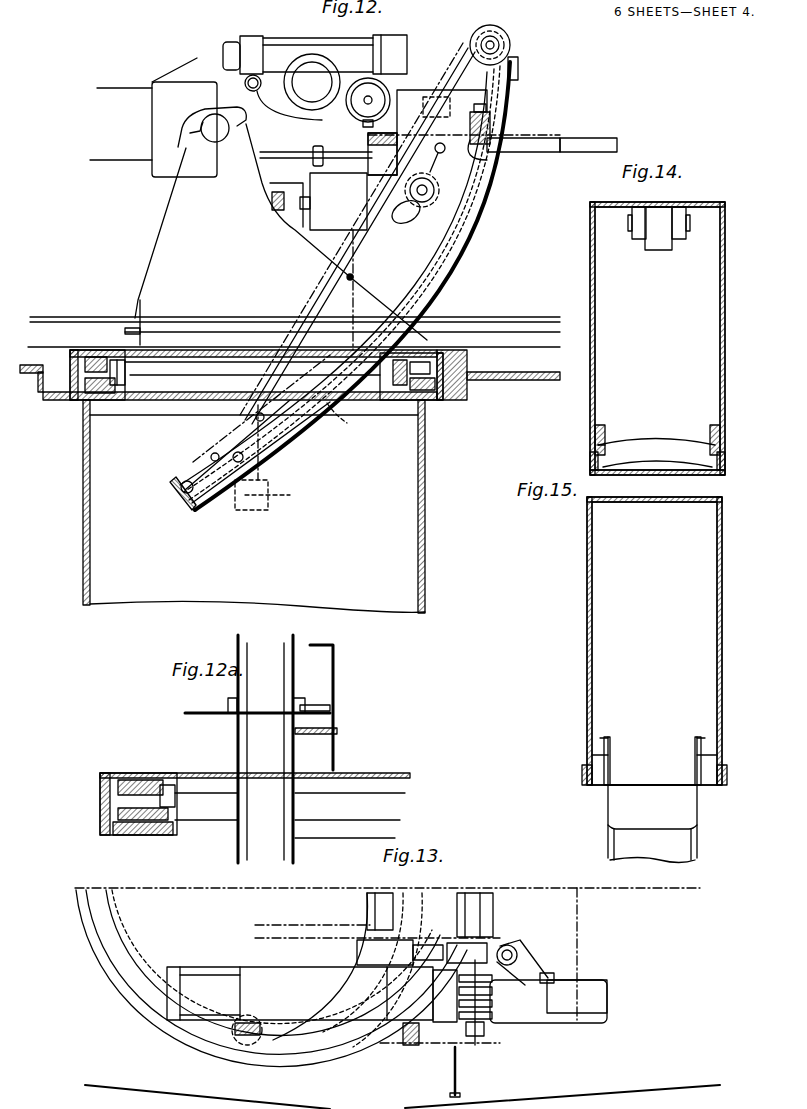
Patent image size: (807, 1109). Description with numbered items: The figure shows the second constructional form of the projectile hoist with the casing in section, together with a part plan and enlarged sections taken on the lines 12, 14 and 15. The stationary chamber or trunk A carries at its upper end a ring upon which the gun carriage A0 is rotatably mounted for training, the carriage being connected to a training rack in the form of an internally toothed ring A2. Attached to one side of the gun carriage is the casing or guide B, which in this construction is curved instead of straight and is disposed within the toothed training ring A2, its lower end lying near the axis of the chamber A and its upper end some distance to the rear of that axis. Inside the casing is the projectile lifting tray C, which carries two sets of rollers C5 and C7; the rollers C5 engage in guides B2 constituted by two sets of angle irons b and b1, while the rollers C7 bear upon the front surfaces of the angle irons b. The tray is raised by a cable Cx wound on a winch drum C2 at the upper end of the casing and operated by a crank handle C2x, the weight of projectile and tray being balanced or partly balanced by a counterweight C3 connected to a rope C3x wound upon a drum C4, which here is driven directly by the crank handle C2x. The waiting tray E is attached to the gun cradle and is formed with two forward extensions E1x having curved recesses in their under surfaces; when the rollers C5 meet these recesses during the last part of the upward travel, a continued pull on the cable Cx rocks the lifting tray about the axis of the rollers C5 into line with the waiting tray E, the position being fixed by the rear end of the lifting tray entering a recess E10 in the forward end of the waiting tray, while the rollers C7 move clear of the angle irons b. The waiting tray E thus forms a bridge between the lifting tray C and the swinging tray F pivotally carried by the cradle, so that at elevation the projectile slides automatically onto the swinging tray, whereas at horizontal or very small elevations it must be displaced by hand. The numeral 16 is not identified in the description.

In FIG. 12, the stationary chamber or trunk A is at (425, 488).
In FIG. 12A, the stationary chamber or trunk A is at (140, 845).
In FIG. 13, the stationary chamber or trunk A is at (85, 905).
In FIG. 12, the gun carriage A0 is at (173, 258).
In FIG. 12, the training rack ring A2 is at (360, 380).
In FIG. 12, the casing or guide B is at (415, 255).
In FIG. 12A, the casing or guide B is at (297, 684).
In FIG. 13, the casing or guide B is at (303, 1007).
In FIG. 14, the casing or guide B is at (722, 338).
In FIG. 15, the casing or guide B is at (722, 567).
In FIG. 12, the guides B2 is at (437, 300).
In FIG. 14, the guides B2 is at (600, 458).
In FIG. 15, the guides B2 is at (590, 778).
In FIG. 12, the angle irons b is at (458, 218).
In FIG. 12A, the angle irons b is at (272, 850).
In FIG. 14, the angle irons b is at (705, 442).
In FIG. 15, the angle irons b is at (712, 752).
In FIG. 12, the angle irons b1 is at (452, 236).
In FIG. 14, the angle irons b1 is at (705, 465).
In FIG. 15, the angle irons b1 is at (695, 788).
In FIG. 12, the projectile lifting tray C is at (207, 500).
In FIG. 12, the winch drum C2 is at (512, 56).
In FIG. 13, the winch drum C2 is at (520, 978).
In FIG. 12, the crank handle C2x is at (480, 118).
In FIG. 13, the crank handle C2x is at (458, 1066).
In FIG. 12, the counterweight C3 is at (268, 495).
In FIG. 13, the counterweight C3 is at (252, 1040).
In FIG. 12, the rope C3x is at (339, 423).
In FIG. 13, the rope C3x is at (330, 1030).
In FIG. 12, the drum C4 is at (436, 185).
In FIG. 13, the drum C4 is at (411, 1046).
In FIG. 12, the rollers C5 is at (262, 458).
In FIG. 12, the rollers C7 is at (182, 495).
In FIG. 12, the cable Cx is at (488, 126).
In FIG. 13, the cable Cx is at (452, 990).
In FIG. 12, the waiting tray E is at (540, 140).
In FIG. 13, the waiting tray E is at (522, 1000).
In FIG. 15, the waiting tray E is at (640, 842).
In FIG. 12, the forward extensions E1x is at (490, 138).
In FIG. 15, the forward extensions E1x is at (610, 768).
In FIG. 12, the recess E10 is at (488, 152).
In FIG. 12, the swinging tray F is at (581, 140).
In FIG. 13, the swinging tray F is at (595, 992).
In FIG. 12, the section line 12 is at (353, 232).
In FIG. 12, the section line 14 is at (346, 276).
In FIG. 12, the section line 15 is at (490, 137).
In FIG. 12, the housing box 16 is at (393, 135).